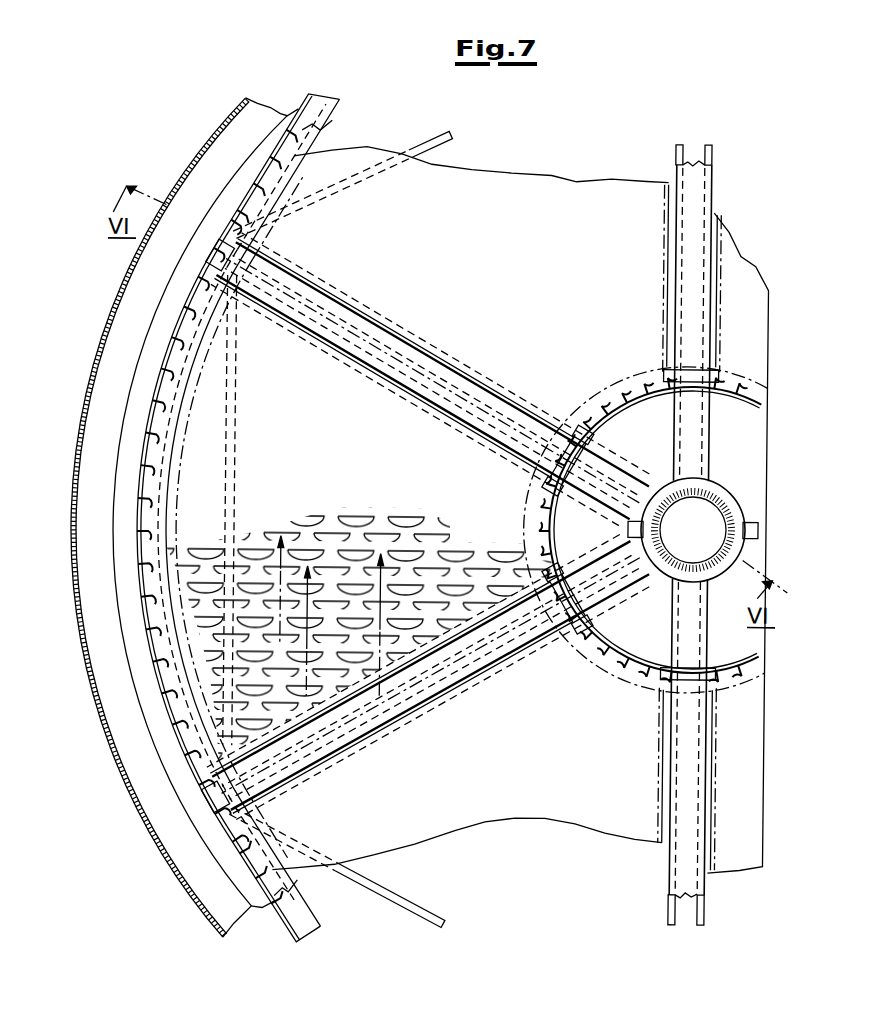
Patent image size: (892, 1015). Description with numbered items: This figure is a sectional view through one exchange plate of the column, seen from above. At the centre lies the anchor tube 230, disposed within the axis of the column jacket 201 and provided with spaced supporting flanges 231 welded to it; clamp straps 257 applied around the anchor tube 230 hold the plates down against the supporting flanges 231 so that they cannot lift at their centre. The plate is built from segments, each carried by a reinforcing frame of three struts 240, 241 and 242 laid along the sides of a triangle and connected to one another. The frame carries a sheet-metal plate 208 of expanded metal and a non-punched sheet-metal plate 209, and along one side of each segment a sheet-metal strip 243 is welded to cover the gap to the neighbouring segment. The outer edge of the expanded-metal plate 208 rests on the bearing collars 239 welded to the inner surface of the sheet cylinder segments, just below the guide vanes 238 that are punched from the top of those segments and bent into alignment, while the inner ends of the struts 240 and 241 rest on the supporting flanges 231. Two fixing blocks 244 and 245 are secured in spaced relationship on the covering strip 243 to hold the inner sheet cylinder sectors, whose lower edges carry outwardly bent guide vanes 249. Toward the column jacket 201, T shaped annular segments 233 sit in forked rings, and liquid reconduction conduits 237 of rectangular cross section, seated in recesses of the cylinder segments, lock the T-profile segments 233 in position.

The column jacket 201 is at (111, 317).
The sheet-metal plate of expanded metal 208 is at (566, 190).
The non-punched sheet-metal plate 209 is at (575, 523).
The anchor tube 230 is at (720, 490).
The supporting flange 231 is at (735, 565).
The T shaped annular segment 233 is at (316, 104).
The liquid reconduction conduit 237 is at (213, 268).
The guide vane 238 is at (150, 370).
The bearing collar 239 is at (326, 130).
The strut 240 is at (397, 385).
The strut 241 is at (517, 388).
The strut 242 is at (450, 142).
The sheet-metal strip 243 is at (450, 385).
The fixing block 244 is at (595, 456).
The fixing block 245 is at (568, 428).
The guide vane 249 is at (611, 650).
The clamp strap 257 is at (713, 572).